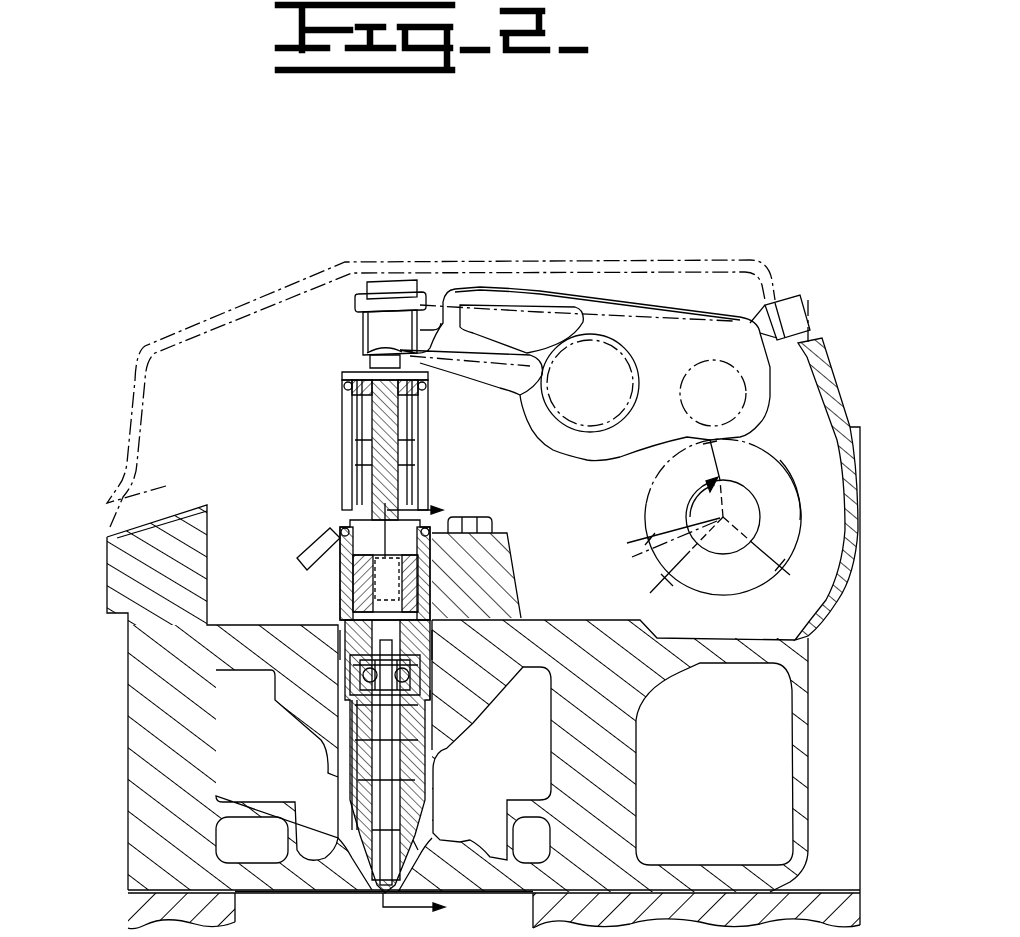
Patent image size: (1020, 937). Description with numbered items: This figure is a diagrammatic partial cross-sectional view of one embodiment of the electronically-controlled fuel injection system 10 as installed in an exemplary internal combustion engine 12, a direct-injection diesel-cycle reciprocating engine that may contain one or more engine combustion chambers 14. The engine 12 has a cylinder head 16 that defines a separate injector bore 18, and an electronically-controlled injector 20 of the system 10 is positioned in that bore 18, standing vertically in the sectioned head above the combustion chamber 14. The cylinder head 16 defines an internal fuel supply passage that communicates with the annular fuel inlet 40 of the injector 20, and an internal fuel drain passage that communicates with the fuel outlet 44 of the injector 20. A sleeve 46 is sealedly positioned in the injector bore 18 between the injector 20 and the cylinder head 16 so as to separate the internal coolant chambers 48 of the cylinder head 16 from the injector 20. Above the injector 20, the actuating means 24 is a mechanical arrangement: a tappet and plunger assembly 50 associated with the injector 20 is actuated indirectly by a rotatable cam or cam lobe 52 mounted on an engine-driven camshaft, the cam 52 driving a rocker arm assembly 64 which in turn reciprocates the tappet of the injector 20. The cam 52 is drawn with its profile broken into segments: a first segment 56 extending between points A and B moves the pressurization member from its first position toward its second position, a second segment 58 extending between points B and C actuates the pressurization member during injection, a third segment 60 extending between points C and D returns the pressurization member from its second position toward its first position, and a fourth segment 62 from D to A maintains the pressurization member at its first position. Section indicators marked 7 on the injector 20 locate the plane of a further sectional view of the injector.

The electronically-controlled fuel injection system 10 is at (187, 346).
The internal combustion engine 12 is at (107, 871).
The engine combustion chamber 14 is at (349, 921).
The cylinder head 16 is at (128, 653).
The injector bore 18 is at (433, 692).
The electronically-controlled injector 20 is at (370, 586).
The actuating means 24 is at (605, 342).
The annular fuel inlet 40 is at (340, 657).
The fuel outlet 44 is at (432, 669).
The sleeve 46 is at (417, 843).
The internal coolant chamber 48 is at (280, 771).
The tappet and plunger assembly 50 is at (321, 358).
The cam 52 is at (709, 533).
The first segment 56 is at (672, 470).
The second segment 58 is at (648, 568).
The third segment 60 is at (727, 593).
The fourth segment 62 is at (790, 478).
The rocker arm assembly 64 is at (578, 292).
The section line 7- 7 is at (414, 705).
The point A is at (711, 443).
The point B is at (648, 537).
The point C is at (678, 582).
The point D is at (782, 563).